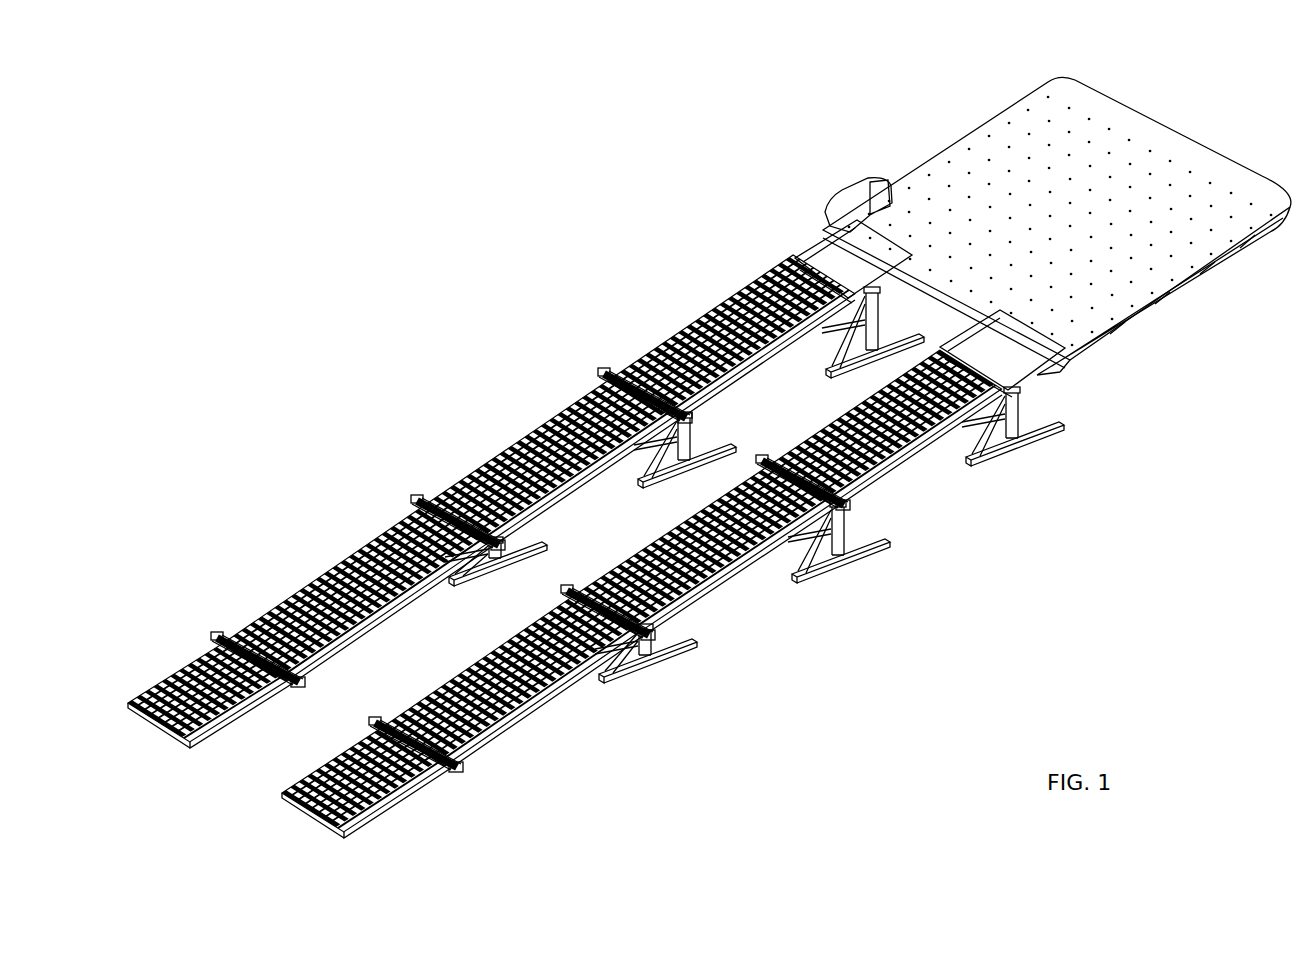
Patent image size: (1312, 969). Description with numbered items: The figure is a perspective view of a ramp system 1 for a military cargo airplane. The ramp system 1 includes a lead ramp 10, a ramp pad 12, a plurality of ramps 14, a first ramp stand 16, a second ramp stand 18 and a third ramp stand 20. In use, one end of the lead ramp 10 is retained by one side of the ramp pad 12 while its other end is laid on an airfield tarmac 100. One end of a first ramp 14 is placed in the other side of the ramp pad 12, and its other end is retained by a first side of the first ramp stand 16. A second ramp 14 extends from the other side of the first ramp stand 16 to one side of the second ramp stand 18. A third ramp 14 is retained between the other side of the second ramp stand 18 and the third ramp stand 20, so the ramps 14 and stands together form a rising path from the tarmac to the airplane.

The C-130 ramp system 1 is at (628, 527).
The lead ramp 10 is at (160, 673).
The ramp pad 12 is at (222, 615).
The ramps 14 is at (678, 313).
The first ramp stand 16 is at (413, 480).
The second ramp stand 18 is at (600, 362).
The third ramp stand 20 is at (783, 252).
The airfield tarmac 100 is at (854, 707).